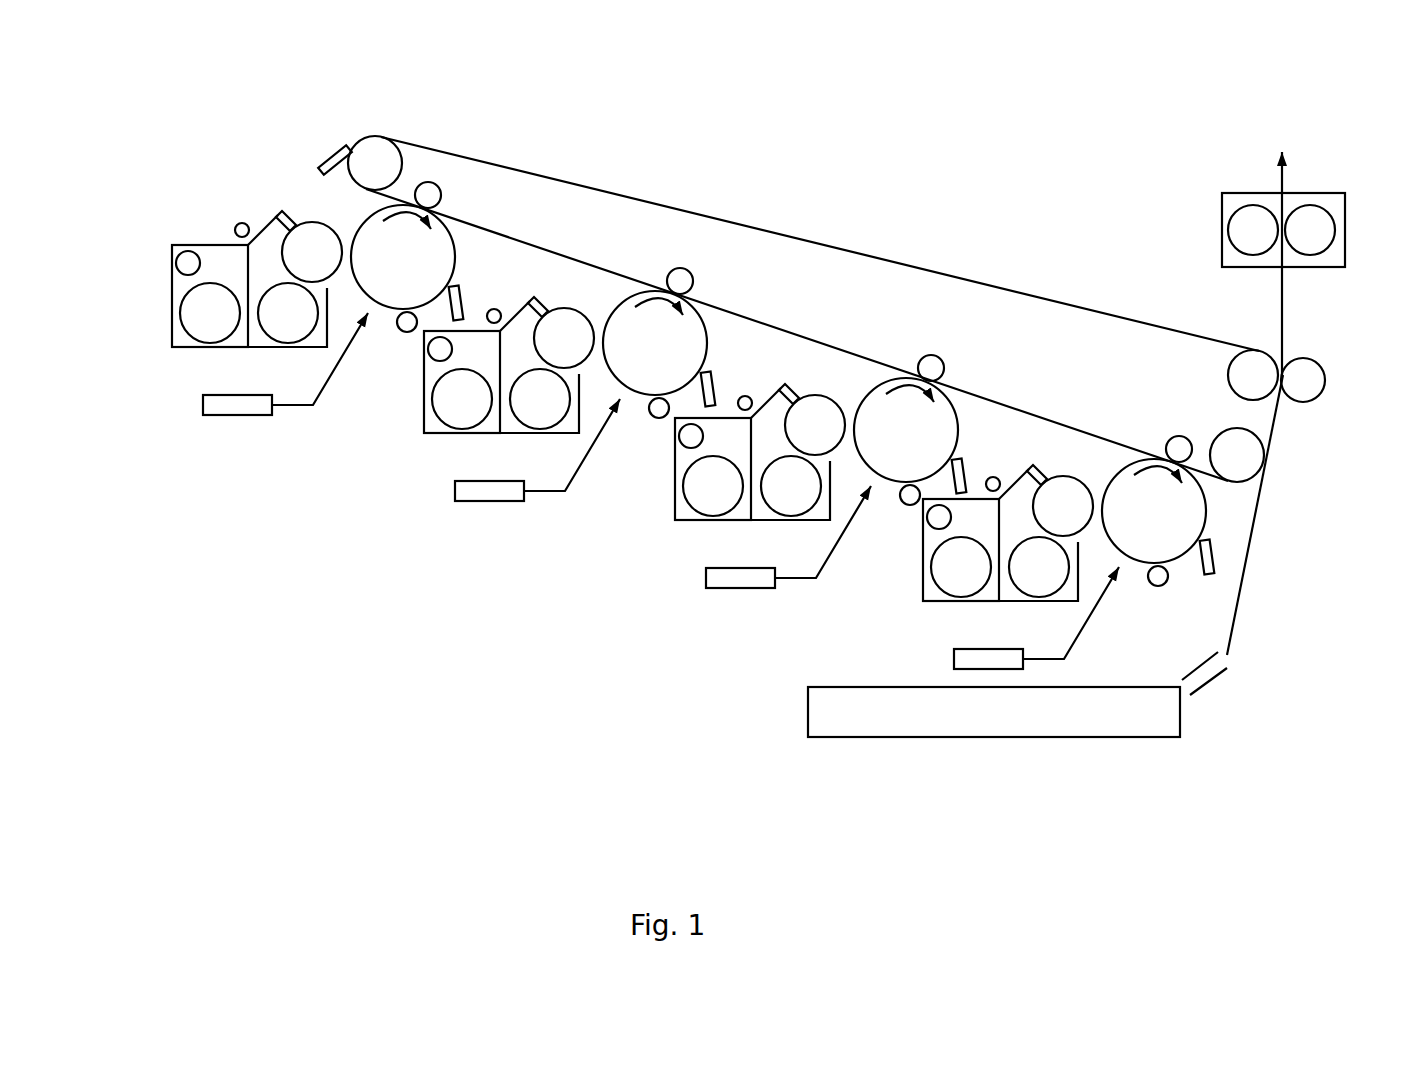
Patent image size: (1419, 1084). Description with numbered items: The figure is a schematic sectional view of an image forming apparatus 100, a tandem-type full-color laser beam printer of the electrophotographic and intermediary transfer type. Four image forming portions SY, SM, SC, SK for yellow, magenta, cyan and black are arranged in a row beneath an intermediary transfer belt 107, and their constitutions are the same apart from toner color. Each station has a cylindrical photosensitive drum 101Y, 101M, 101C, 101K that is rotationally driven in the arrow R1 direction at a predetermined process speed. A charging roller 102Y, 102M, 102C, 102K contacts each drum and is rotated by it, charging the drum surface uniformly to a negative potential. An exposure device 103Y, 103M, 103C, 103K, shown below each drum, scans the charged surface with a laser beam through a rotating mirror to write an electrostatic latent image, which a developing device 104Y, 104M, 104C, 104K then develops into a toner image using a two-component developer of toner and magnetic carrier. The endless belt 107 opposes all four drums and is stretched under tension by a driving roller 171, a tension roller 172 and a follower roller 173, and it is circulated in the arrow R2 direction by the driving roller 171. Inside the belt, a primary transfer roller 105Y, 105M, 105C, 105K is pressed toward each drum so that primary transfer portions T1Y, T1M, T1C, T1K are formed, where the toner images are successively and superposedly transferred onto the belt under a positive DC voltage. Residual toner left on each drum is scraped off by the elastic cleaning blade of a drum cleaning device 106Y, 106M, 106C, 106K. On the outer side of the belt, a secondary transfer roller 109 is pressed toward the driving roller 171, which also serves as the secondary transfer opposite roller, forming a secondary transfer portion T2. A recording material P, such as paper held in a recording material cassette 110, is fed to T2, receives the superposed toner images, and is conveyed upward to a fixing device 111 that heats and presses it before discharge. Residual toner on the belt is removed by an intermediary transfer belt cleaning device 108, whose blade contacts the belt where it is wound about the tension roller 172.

The image forming apparatus 100 is at (866, 132).
The photosensitive drum 101Y is at (457, 252).
The photosensitive drum 101M is at (708, 340).
The photosensitive drum 101C is at (960, 428).
The photosensitive drum 101K is at (1207, 513).
The charging roller 102Y is at (402, 332).
The charging roller 102M is at (655, 415).
The charging roller 102C is at (905, 506).
The charging roller 102K is at (1152, 586).
The exposure device 103Y is at (243, 417).
The exposure device 103M is at (487, 503).
The exposure device 103C is at (738, 590).
The exposure device 103K is at (1010, 640).
The developing device 104Y is at (193, 234).
The developing device 104M is at (415, 405).
The developing device 104C is at (668, 490).
The developing device 104K is at (915, 576).
The primary transfer roller 105Y is at (437, 207).
The primary transfer roller 105M is at (700, 280).
The primary transfer roller 105C is at (950, 368).
The primary transfer roller 105K is at (1175, 437).
The drum cleaning device 106Y is at (466, 299).
The drum cleaning device 106M is at (716, 386).
The drum cleaning device 106C is at (967, 473).
The drum cleaning device 106K is at (1210, 581).
The intermediary transfer belt 107 is at (786, 234).
The intermediary transfer belt cleaning device 108 is at (329, 150).
The secondary transfer roller 109 is at (1322, 366).
The recording material cassette 110 is at (808, 700).
The fixing device 111 is at (1242, 192).
The driving roller 171 is at (1228, 375).
The tension roller 172 is at (402, 157).
The follower roller 173 is at (1263, 443).
The primary transfer portion T1Y is at (417, 203).
The primary transfer portion T1M is at (668, 282).
The primary transfer portion T1C is at (905, 372).
The primary transfer portion T1K is at (1168, 458).
The secondary transfer portion T2 is at (1287, 355).
The image forming portion SY is at (181, 377).
The image forming portion SM is at (431, 461).
The image forming portion SC is at (683, 547).
The image forming portion SK is at (940, 620).
The drum rotation direction R1 is at (782, 369).
The belt rotation direction R2 is at (540, 233).
The recording material P is at (1244, 573).